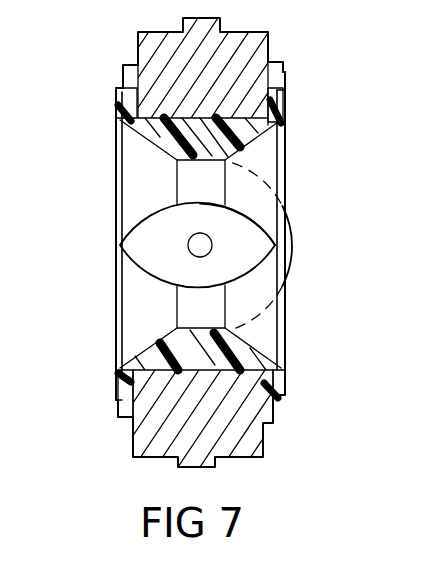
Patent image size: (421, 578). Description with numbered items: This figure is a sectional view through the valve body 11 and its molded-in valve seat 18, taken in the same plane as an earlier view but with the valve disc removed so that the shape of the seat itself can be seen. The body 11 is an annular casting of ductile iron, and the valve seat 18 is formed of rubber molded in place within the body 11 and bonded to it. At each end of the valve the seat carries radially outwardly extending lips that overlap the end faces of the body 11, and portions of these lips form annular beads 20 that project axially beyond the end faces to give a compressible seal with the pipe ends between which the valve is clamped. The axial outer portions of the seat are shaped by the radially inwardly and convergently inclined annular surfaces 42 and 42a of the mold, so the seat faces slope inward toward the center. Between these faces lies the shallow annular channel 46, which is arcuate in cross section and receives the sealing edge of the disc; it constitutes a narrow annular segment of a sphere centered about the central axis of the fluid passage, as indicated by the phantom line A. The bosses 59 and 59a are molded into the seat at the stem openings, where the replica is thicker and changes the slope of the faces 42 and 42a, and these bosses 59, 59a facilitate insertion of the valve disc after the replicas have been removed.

The valve body 11 is at (288, 68).
The valve seat 18 is at (290, 331).
The annular beads 20 is at (284, 123).
The inclined annular surface 42 is at (128, 137).
The inclined annular surface 42a is at (262, 143).
The annular channel 46 is at (190, 172).
The boss 59 is at (148, 242).
The boss 59a is at (250, 240).
The phantom line A is at (293, 250).